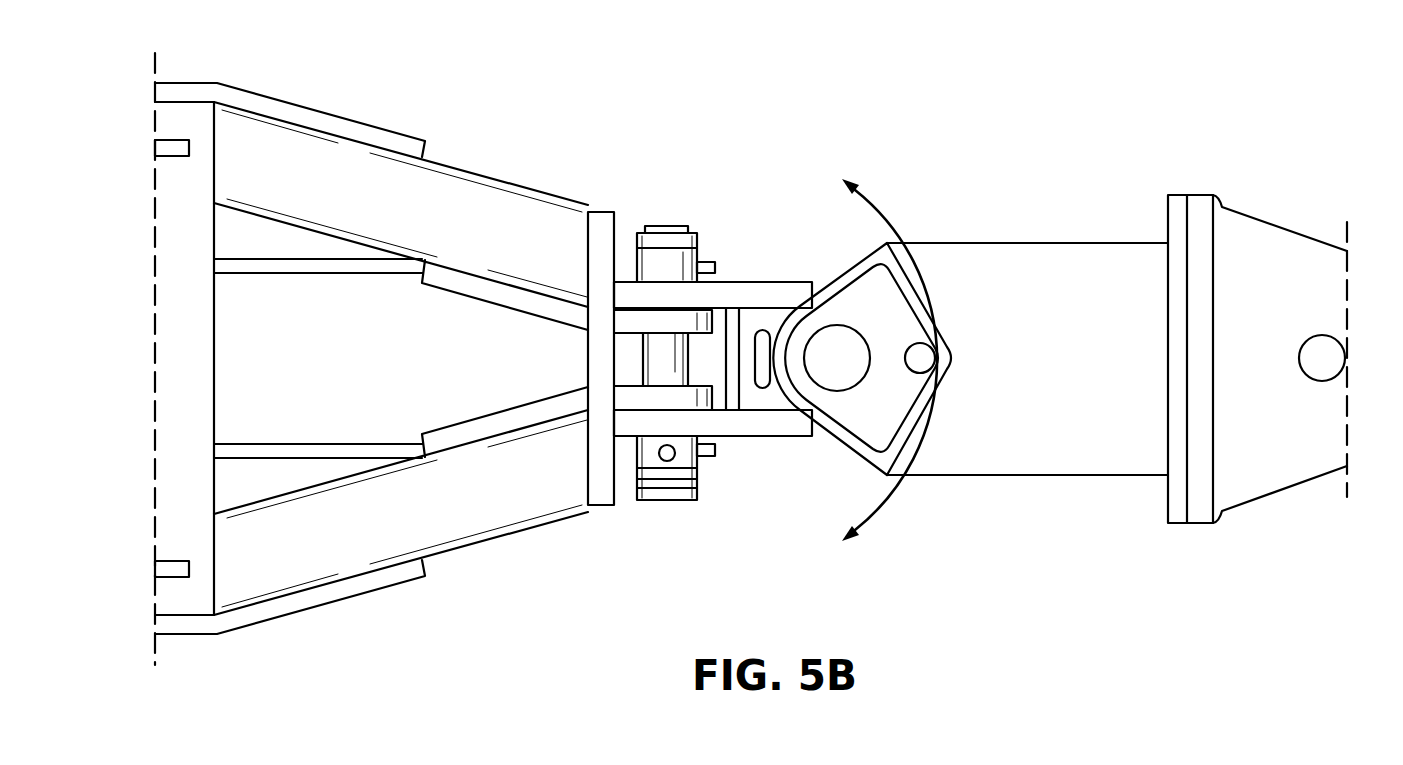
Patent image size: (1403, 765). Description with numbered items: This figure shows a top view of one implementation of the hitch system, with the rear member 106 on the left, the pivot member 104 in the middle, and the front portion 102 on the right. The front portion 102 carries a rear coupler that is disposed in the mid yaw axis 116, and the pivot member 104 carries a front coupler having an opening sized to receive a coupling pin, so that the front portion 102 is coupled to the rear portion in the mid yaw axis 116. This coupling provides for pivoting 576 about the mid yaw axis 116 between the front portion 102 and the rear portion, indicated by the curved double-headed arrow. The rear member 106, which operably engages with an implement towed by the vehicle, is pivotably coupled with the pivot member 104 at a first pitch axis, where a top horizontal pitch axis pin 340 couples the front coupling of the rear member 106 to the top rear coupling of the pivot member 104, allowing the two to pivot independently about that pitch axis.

The front portion 102 is at (1009, 230).
The pivot member 104 is at (733, 278).
The rear member 106 is at (514, 178).
The mid yaw axis 116 is at (832, 388).
The top horizontal pitch axis pin 340 is at (661, 518).
The pivoting 576 is at (897, 500).